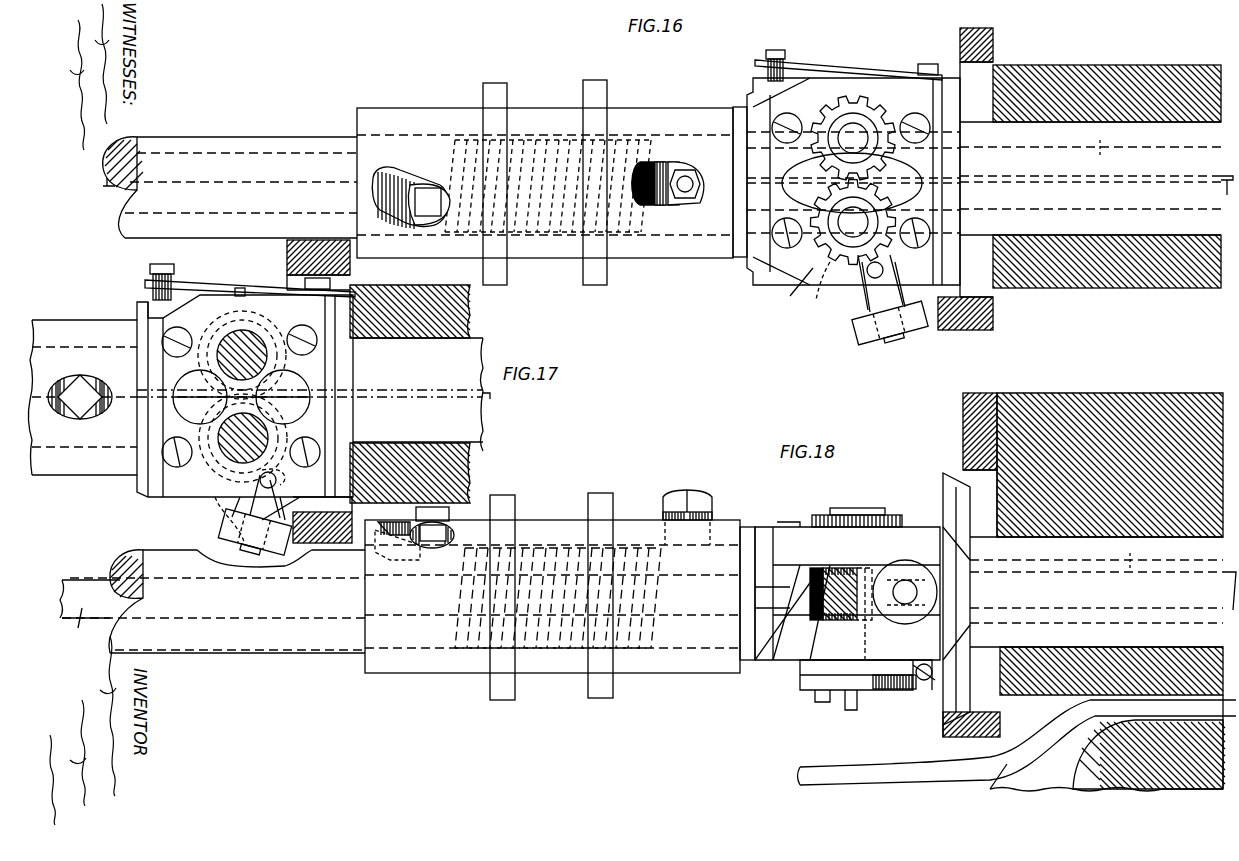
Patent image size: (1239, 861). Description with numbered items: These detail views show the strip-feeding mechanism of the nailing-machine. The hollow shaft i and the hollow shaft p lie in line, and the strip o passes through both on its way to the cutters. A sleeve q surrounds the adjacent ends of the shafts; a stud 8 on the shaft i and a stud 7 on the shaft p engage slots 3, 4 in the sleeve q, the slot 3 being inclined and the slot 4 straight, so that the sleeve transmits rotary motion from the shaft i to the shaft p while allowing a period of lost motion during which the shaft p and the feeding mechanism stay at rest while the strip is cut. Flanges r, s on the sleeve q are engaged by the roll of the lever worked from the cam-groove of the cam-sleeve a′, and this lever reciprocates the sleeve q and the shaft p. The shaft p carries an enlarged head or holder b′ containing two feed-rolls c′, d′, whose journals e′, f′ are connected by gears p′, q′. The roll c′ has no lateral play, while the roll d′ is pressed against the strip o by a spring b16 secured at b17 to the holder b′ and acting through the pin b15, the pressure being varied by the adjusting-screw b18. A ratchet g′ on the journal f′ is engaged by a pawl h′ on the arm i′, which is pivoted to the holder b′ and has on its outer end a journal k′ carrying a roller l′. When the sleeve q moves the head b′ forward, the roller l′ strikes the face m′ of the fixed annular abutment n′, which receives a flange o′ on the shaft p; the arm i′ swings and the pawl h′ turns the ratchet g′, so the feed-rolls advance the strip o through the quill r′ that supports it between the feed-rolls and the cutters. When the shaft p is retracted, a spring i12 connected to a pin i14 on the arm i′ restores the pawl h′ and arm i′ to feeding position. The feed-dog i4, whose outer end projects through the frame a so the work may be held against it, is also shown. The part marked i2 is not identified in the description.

In FIG. 16, the frame a is at (1107, 176).
In FIG. 17, the frame a is at (410, 394).
In FIG. 18, the frame a is at (1110, 544).
In FIG. 16, the hollow shaft i is at (220, 150).
In FIG. 18, the hollow shaft i is at (155, 557).
In FIG. 16, the strip o is at (105, 190).
In FIG. 17, the strip o is at (486, 399).
In FIG. 18, the strip o is at (88, 620).
In FIG. 16, the sleeve q is at (550, 130).
In FIG. 18, the sleeve q is at (555, 525).
In FIG. 16, the flange r is at (500, 100).
In FIG. 18, the flange r is at (505, 510).
In FIG. 16, the flange s is at (598, 92).
In FIG. 18, the flange s is at (603, 500).
In FIG. 16, the inclined slot 3 is at (385, 178).
In FIG. 18, the inclined slot 3 is at (450, 530).
In FIG. 16, the stud 8 is at (428, 188).
In FIG. 16, the straight slot 4 is at (660, 165).
In FIG. 17, the straight slot 4 is at (98, 380).
In FIG. 18, the straight slot 4 is at (712, 520).
In FIG. 16, the stud 7 is at (686, 170).
In FIG. 17, the stud 7 is at (62, 380).
In FIG. 18, the stud 7 is at (686, 490).
In FIG. 16, the hollow shaft p is at (742, 130).
In FIG. 17, the hollow shaft p is at (216, 379).
In FIG. 18, the hollow shaft p is at (748, 527).
In FIG. 16, the gear p′ is at (815, 112).
In FIG. 17, the gear p′ is at (241, 396).
In FIG. 18, the gear p′ is at (845, 528).
In FIG. 16, the cam-sleeve a′ is at (853, 95).
In FIG. 17, the cam-sleeve a′ is at (309, 393).
In FIG. 16, the journal f′ is at (858, 135).
In FIG. 17, the journal f′ is at (230, 345).
In FIG. 16, the journal e′ is at (870, 225).
In FIG. 17, the journal e′ is at (230, 448).
In FIG. 16, the head or holder b′ is at (885, 80).
In FIG. 17, the head or holder b′ is at (237, 352).
In FIG. 18, the head or holder b′ is at (905, 527).
In FIG. 16, the pin b15 is at (862, 78).
In FIG. 17, the pin b15 is at (242, 290).
In FIG. 17, the spring b16 is at (190, 285).
In FIG. 16, the securing point of spring b17 is at (928, 64).
In FIG. 17, the securing point of spring b17 is at (332, 284).
In FIG. 16, the adjusting-screw b18 is at (790, 60).
In FIG. 17, the adjusting-screw b18 is at (150, 292).
In FIG. 16, the fixed annular abutment n′ is at (962, 30).
In FIG. 17, the fixed annular abutment n′ is at (318, 265).
In FIG. 18, the fixed annular abutment n′ is at (963, 470).
In FIG. 16, the face of abutment m′ is at (976, 179).
In FIG. 17, the face of abutment m′ is at (322, 518).
In FIG. 18, the face of abutment m′ is at (980, 503).
In FIG. 16, the flange o′ is at (960, 137).
In FIG. 18, the flange o′ is at (945, 525).
In FIG. 16, the quill r′ is at (1098, 138).
In FIG. 18, the quill r′ is at (1126, 552).
In FIG. 16, the journal k′ is at (897, 338).
In FIG. 18, the journal k′ is at (915, 592).
In FIG. 16, the arm i′ is at (865, 335).
In FIG. 18, the arm i′ is at (835, 668).
In FIG. 16, the feed-roll c′ is at (844, 289).
In FIG. 17, the feed-roll c′ is at (215, 497).
In FIG. 16, the gear q′ is at (795, 290).
In FIG. 17, the roller l′ is at (222, 528).
In FIG. 18, the pawl h′ is at (835, 685).
In FIG. 18, the feed-roll d′ is at (828, 615).
In FIG. 18, the arm i2 is at (805, 655).
In FIG. 18, the ratchet g′ is at (890, 692).
In FIG. 18, the pin i14 is at (920, 685).
In FIG. 18, the spring i12 is at (930, 682).
In FIG. 18, the feed-dog i4 is at (1040, 740).